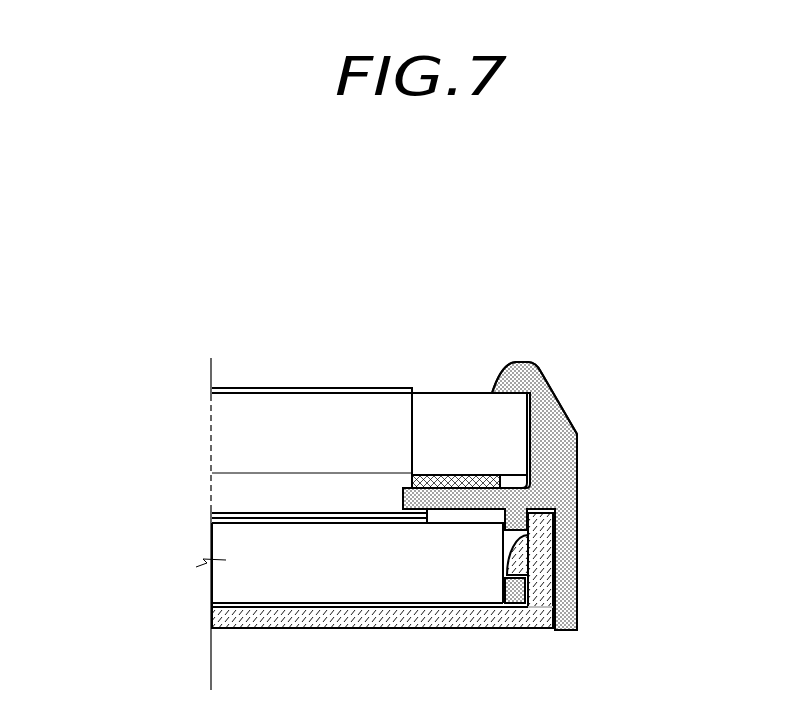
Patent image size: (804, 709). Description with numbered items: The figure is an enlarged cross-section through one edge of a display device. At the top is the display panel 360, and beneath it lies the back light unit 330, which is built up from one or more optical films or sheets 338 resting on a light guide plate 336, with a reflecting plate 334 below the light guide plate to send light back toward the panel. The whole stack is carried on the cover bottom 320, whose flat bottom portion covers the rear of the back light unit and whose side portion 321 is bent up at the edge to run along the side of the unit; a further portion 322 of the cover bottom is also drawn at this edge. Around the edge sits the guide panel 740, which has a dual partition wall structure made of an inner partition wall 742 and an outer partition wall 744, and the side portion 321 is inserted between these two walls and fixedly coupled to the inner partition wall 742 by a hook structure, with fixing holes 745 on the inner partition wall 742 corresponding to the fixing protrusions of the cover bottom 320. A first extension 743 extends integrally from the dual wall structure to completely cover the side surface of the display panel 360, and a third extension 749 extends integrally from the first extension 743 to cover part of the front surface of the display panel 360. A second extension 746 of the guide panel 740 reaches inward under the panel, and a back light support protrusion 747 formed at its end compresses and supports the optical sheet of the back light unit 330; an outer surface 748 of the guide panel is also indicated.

The cover bottom 320 is at (268, 618).
The side portion 321 is at (542, 592).
The protrusion 322 is at (528, 563).
The back light unit 330 is at (274, 558).
The reflecting plate 334 is at (210, 605).
The light guide plate 336 is at (213, 543).
The optical films or sheets 338 is at (212, 518).
The display panel 360 is at (320, 388).
The guide panel 740 is at (583, 472).
The inner partition wall 742 is at (510, 598).
The first extension 743 is at (535, 365).
The outer partition wall 744 is at (573, 543).
The fixing holes 745 is at (510, 538).
The second extension 746 is at (397, 493).
The back light support protrusion 747 is at (412, 525).
The frame side 748 is at (577, 510).
The third extension 749 is at (493, 388).